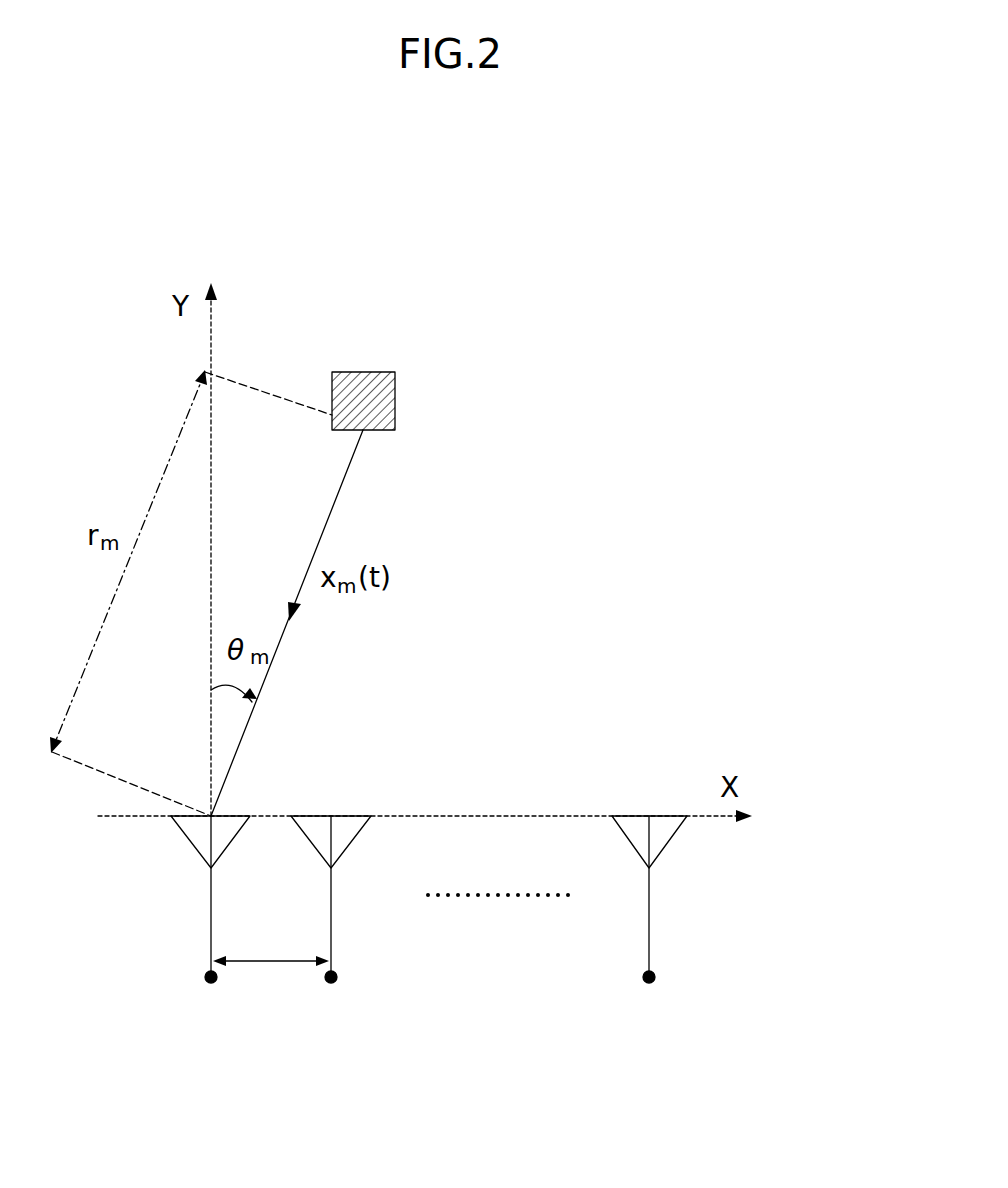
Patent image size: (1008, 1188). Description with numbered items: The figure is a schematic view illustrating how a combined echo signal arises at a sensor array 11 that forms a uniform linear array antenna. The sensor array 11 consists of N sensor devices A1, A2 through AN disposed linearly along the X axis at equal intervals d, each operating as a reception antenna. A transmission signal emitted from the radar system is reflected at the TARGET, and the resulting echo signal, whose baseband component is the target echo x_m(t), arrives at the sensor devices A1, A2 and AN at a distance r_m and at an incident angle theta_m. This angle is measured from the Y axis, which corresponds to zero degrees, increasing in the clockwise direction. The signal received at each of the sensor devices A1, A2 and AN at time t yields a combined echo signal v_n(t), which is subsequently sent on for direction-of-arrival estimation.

The sensor array 11 is at (484, 926).
The first sensor device A1 is at (218, 926).
The second sensor device A2 is at (335, 926).
The N-th sensor device AN is at (657, 926).
The target TARGET is at (363, 383).